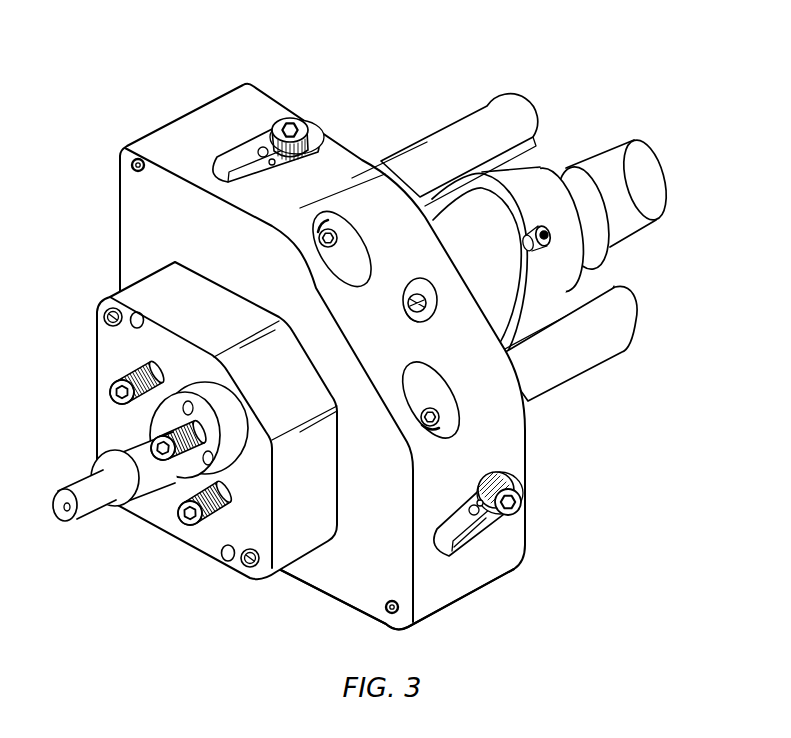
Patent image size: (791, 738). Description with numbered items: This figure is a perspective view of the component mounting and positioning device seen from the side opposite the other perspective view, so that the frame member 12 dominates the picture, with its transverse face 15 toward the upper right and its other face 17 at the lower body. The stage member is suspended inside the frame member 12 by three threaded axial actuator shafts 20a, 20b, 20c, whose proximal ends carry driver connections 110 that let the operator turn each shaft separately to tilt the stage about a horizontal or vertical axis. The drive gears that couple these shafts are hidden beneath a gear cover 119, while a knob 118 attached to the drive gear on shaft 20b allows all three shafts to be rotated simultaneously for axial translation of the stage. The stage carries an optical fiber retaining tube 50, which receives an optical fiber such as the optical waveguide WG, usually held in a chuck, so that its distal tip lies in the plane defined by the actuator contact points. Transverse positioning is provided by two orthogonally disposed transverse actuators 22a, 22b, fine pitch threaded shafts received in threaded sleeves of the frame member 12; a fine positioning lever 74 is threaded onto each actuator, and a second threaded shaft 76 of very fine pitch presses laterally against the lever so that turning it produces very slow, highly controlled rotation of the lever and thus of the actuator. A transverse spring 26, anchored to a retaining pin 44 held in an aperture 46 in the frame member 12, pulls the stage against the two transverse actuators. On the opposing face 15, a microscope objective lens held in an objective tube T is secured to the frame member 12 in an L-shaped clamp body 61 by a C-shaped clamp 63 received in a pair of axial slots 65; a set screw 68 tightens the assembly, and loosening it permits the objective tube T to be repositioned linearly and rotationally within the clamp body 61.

The frame member 12 is at (120, 233).
The face 15 is at (382, 329).
The face 17 is at (384, 573).
The axial actuator shaft 20a is at (124, 382).
The axial actuator shaft 20b is at (212, 432).
The axial actuator shaft 20c is at (216, 526).
The transverse actuator 22a is at (316, 130).
The transverse actuator 22b is at (507, 485).
The transverse spring 26 is at (440, 310).
The retaining pin 44 is at (425, 288).
The aperture 46 is at (413, 323).
The optical fiber retaining tube 50 is at (113, 440).
The L-shaped clamp body 61 is at (578, 368).
The C-shaped clamp 63 is at (583, 255).
The axial slots 65 is at (530, 153).
The set screw 68 is at (549, 228).
The fine positioning lever 74 is at (447, 521).
The second threaded shaft 76 is at (332, 252).
The driver connection 110 is at (152, 444).
The knob 118 is at (193, 390).
The gear cover 119 is at (327, 472).
The objective tube T is at (653, 210).
The optical waveguide WG is at (82, 508).